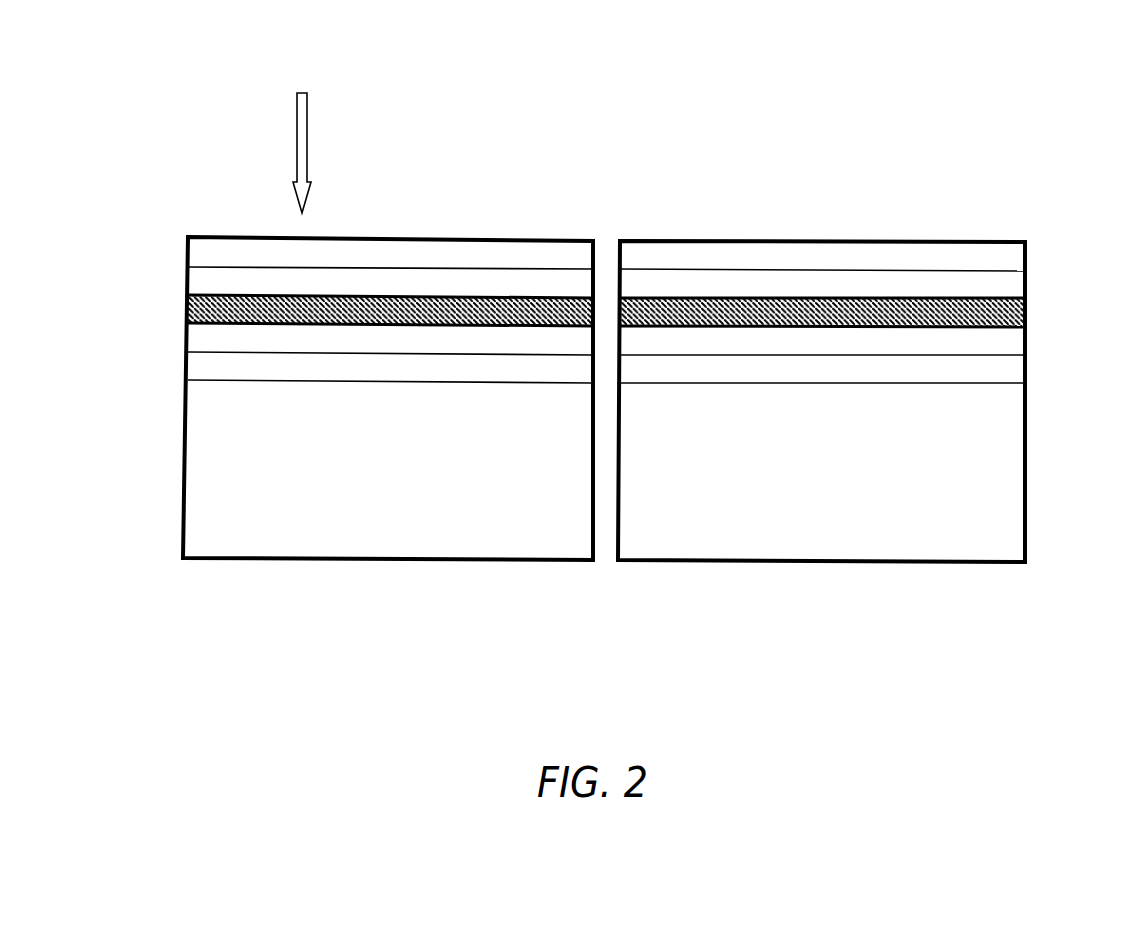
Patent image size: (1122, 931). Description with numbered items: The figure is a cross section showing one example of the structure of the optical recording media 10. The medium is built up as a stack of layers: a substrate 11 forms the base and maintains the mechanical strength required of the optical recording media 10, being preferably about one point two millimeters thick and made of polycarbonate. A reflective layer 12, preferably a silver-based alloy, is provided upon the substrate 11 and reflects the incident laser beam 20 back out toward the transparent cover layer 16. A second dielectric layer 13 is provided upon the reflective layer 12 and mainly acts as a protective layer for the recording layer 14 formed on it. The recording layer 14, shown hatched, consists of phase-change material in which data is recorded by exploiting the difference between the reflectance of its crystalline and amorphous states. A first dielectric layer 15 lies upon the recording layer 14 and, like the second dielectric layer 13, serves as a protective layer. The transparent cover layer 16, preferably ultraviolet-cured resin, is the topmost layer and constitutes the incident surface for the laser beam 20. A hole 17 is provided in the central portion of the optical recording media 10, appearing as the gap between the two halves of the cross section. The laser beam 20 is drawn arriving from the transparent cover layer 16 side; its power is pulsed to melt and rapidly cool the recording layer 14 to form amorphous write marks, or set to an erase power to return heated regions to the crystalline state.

The optical recording media 10 is at (840, 86).
The substrate 11 is at (1026, 467).
The reflective layer 12 is at (1027, 363).
The second dielectric layer 13 is at (1027, 335).
The recording layer 14 is at (1027, 307).
The first dielectric layer 15 is at (1027, 279).
The transparent cover layer 16 is at (1027, 251).
The hole 17 is at (603, 568).
The laser beam 20 is at (307, 147).